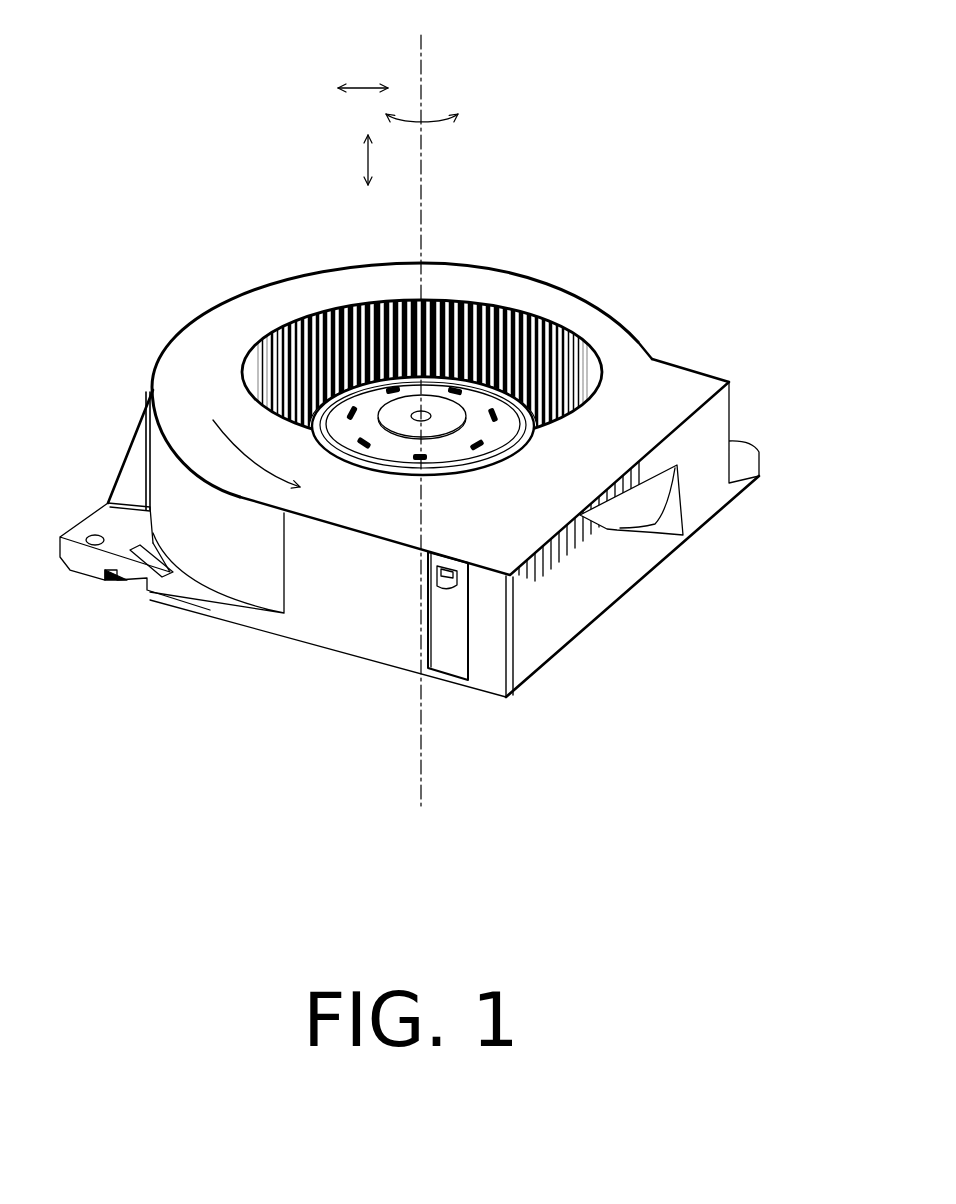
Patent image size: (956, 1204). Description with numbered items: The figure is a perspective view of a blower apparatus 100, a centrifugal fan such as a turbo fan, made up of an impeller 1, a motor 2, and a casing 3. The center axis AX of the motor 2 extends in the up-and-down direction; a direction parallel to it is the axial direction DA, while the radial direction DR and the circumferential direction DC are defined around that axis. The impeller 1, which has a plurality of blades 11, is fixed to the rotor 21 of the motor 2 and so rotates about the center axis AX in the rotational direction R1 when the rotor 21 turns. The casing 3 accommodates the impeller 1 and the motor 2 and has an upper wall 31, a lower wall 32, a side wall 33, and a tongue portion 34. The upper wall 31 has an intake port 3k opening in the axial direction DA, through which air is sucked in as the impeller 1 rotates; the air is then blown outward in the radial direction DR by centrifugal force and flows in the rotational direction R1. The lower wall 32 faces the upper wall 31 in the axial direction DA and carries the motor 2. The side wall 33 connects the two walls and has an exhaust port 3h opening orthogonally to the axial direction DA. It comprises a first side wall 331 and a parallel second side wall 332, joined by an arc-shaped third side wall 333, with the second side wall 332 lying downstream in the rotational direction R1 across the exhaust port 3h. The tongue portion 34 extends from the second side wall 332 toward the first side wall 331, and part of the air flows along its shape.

The blower apparatus 100 is at (433, 454).
The impeller 1 is at (423, 345).
The blades 11 is at (495, 305).
The motor 2 is at (422, 347).
The rotor 21 is at (363, 297).
The casing 3 is at (433, 496).
The intake port 3k is at (255, 334).
The exhaust port 3h is at (632, 581).
The upper wall 31 is at (680, 377).
The lower wall 32 is at (627, 592).
The side wall 33 is at (181, 491).
The first side wall 331 is at (492, 669).
The second side wall 332 is at (735, 410).
The third side wall 333 is at (240, 563).
The tongue portion 34 is at (633, 531).
The center axis AX is at (425, 48).
The radial direction DR is at (362, 88).
The axial direction DA is at (366, 153).
The circumferential direction DC is at (458, 132).
The rotational direction R1 is at (220, 430).